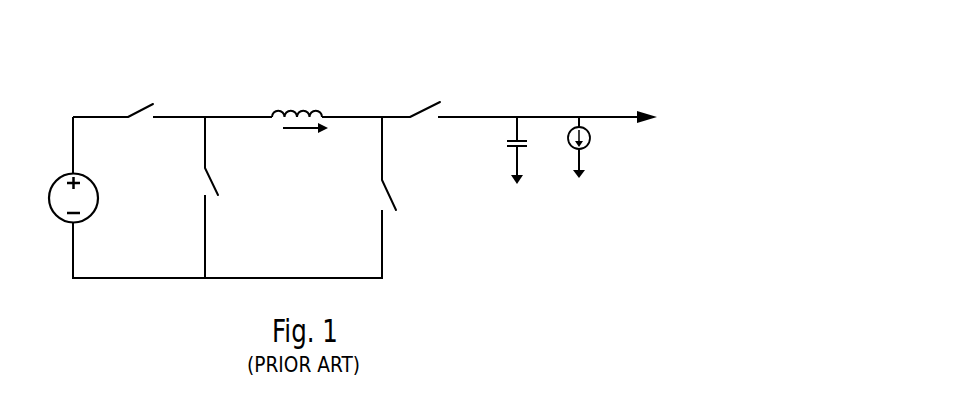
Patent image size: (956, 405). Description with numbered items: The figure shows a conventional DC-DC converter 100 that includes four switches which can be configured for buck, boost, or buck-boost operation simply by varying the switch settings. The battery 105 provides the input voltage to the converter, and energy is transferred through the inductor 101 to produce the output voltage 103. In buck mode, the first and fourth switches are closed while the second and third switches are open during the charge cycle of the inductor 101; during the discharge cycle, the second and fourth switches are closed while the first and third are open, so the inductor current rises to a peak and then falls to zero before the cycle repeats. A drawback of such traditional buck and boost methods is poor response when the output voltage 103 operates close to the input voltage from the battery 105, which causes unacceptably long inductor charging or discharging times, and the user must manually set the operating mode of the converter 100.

The DC-DC converter 100 is at (484, 46).
The inductor 101 is at (318, 105).
The output voltage 103 is at (671, 100).
The battery 105 is at (62, 172).